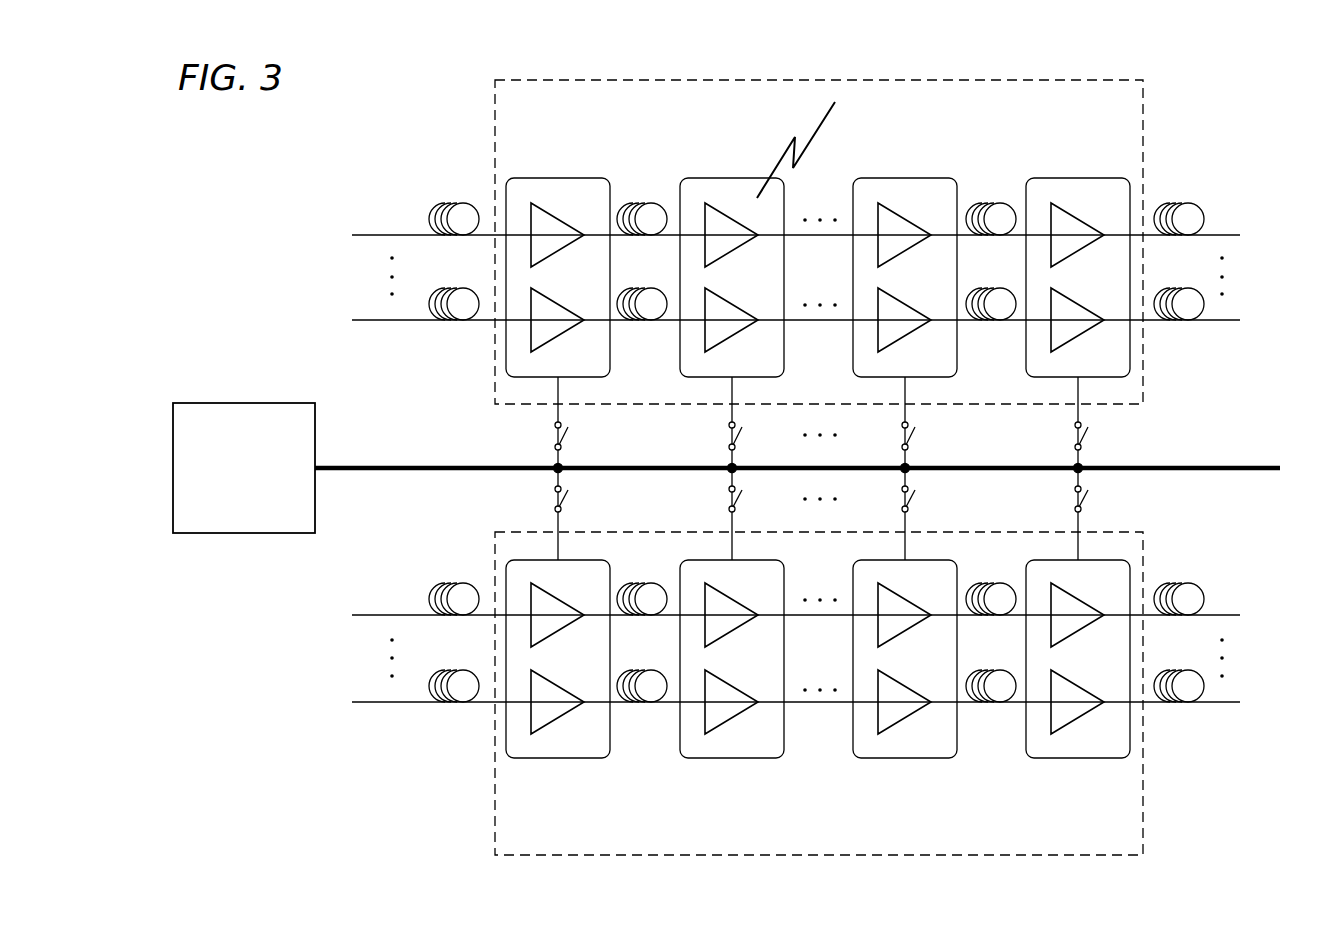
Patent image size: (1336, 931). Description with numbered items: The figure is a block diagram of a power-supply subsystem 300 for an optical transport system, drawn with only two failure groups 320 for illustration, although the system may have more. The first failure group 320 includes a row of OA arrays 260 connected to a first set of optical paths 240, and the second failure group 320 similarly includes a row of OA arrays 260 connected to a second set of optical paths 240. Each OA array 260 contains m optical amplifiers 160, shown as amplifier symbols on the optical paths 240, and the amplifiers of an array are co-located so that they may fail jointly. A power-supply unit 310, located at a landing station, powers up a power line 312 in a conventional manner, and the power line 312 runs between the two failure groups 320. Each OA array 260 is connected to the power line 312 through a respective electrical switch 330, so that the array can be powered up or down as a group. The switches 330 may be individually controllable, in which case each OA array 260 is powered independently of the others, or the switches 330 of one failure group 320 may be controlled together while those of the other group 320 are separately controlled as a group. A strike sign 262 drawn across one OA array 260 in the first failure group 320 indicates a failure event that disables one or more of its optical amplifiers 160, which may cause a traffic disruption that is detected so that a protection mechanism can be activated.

The power-supply subsystem 300 is at (262, 138).
The power-supply unit 310 is at (269, 404).
The power line 312 is at (1246, 466).
The failure group 320 is at (494, 89).
The optical path 240 is at (390, 231).
The OA array 260 is at (569, 176).
The optical amplifier 160 is at (544, 261).
The strike sign 262 is at (824, 122).
The electrical switch 330 is at (549, 431).